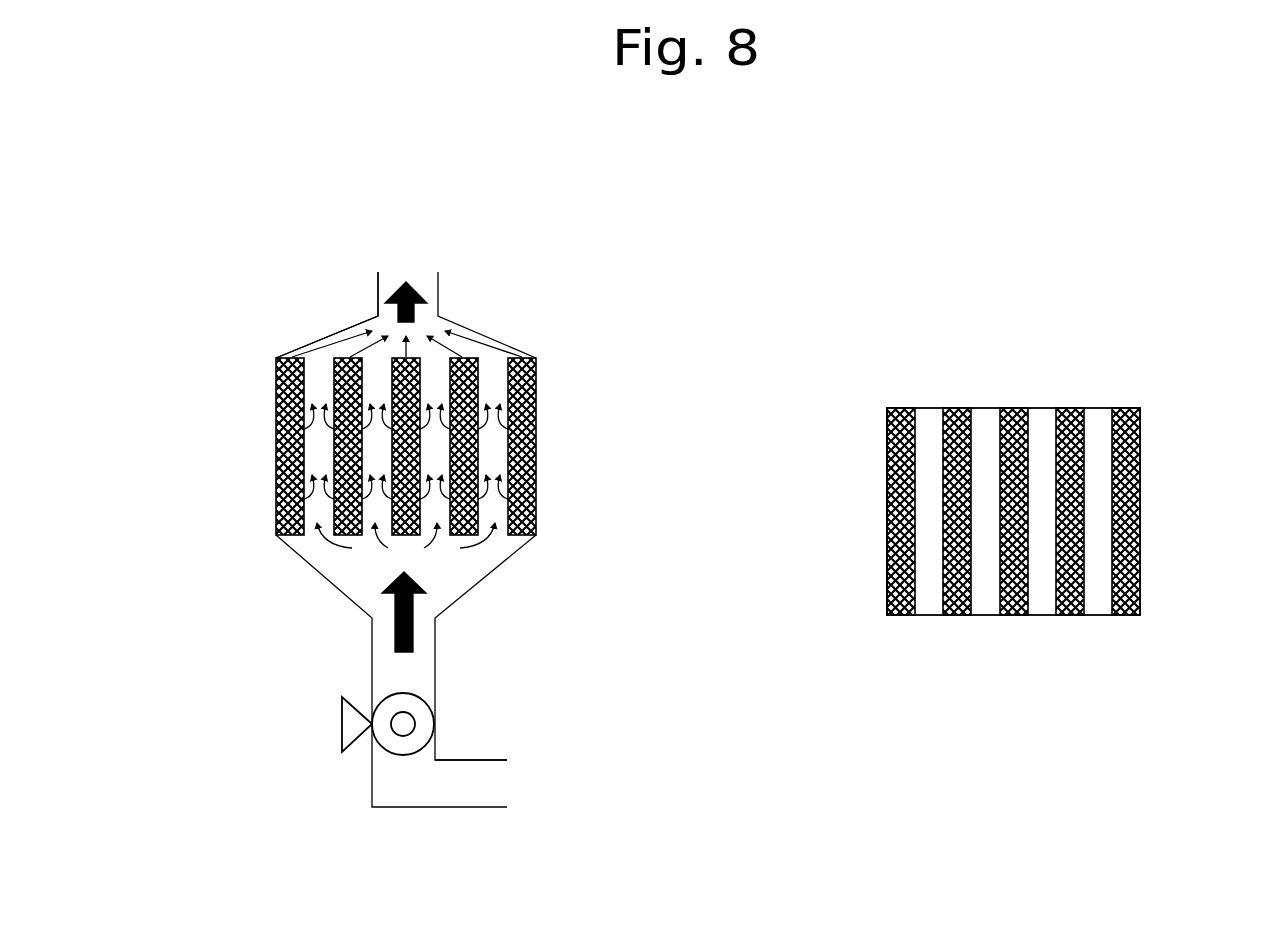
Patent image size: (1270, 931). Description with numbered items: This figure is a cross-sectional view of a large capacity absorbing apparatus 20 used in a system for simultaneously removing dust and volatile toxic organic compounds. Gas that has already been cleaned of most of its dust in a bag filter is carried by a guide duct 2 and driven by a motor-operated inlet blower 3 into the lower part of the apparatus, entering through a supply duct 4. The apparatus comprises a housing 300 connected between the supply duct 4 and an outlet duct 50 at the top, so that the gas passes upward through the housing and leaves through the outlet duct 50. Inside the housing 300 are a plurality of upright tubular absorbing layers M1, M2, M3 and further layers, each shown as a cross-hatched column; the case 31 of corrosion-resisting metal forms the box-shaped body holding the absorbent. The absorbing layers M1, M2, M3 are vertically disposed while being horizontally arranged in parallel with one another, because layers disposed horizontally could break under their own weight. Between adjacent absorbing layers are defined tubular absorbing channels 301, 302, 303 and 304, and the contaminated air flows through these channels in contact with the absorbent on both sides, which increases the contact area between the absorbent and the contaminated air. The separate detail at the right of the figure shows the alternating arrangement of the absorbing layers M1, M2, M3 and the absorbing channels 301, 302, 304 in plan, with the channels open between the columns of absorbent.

The large capacity absorbing apparatus 20 is at (579, 330).
The outlet duct 50 is at (378, 277).
The housing 300 is at (303, 342).
The tubular absorbing channel 301 is at (318, 440).
The tubular absorbing channel 302 is at (380, 380).
The tubular absorbing channel 303 is at (433, 408).
The tubular absorbing channel 304 is at (1042, 425).
The case 31 is at (537, 448).
The supply duct 4 is at (427, 636).
The inlet blower 3 is at (353, 723).
The guide duct 2 is at (473, 778).
The upright tubular absorbing layer M1 is at (345, 505).
The upright tubular absorbing layer M2 is at (948, 615).
The upright tubular absorbing layer M3 is at (1005, 615).